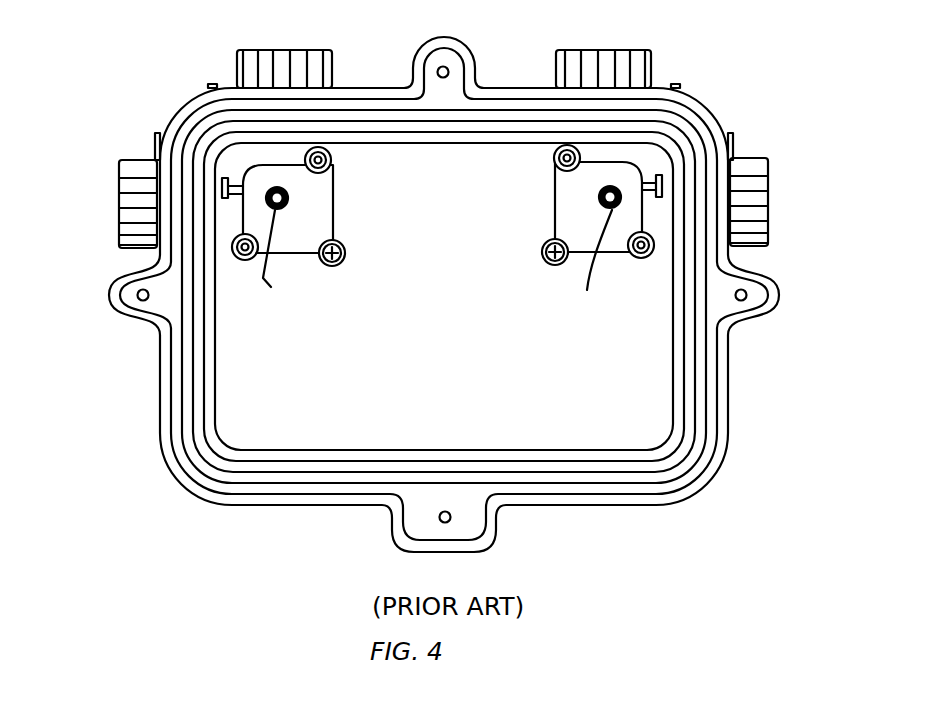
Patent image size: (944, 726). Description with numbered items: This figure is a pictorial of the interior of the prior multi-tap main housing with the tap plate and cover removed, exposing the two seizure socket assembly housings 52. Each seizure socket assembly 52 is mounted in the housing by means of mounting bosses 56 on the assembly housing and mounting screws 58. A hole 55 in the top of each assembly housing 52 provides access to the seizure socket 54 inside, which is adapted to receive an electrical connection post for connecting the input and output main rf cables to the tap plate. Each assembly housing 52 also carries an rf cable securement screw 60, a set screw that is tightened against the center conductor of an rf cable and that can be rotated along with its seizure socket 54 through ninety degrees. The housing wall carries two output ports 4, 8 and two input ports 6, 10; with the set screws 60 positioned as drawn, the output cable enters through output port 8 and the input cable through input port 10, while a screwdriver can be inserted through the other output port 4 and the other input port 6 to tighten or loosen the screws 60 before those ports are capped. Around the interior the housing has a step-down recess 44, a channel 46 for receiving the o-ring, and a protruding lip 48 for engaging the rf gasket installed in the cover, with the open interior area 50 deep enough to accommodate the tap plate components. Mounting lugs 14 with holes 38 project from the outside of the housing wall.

The output port 4 is at (138, 158).
The input port 6 is at (763, 157).
The output port 8 is at (237, 62).
The input port 10 is at (653, 58).
The mounting lug 14 is at (472, 54).
The mounting hole 38 is at (440, 69).
The step-down recess 44 is at (698, 408).
The channel 46 is at (687, 375).
The protruding lip 48 is at (253, 452).
The interior cavity 50 is at (236, 404).
The seizure socket assembly 52 is at (333, 193).
The seizure socket 54 is at (287, 202).
The hole 55 is at (437, 256).
The mounting boss 56 is at (330, 152).
The mounting screw 58 is at (333, 267).
The rf cable securement screw 60 is at (237, 176).